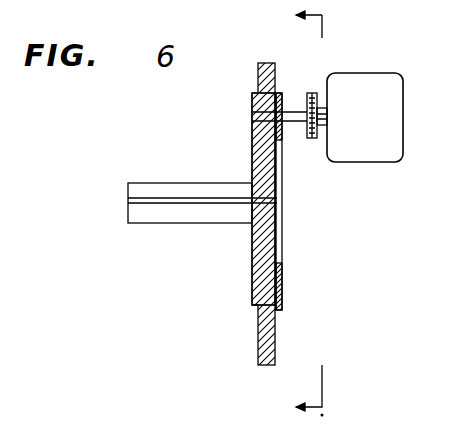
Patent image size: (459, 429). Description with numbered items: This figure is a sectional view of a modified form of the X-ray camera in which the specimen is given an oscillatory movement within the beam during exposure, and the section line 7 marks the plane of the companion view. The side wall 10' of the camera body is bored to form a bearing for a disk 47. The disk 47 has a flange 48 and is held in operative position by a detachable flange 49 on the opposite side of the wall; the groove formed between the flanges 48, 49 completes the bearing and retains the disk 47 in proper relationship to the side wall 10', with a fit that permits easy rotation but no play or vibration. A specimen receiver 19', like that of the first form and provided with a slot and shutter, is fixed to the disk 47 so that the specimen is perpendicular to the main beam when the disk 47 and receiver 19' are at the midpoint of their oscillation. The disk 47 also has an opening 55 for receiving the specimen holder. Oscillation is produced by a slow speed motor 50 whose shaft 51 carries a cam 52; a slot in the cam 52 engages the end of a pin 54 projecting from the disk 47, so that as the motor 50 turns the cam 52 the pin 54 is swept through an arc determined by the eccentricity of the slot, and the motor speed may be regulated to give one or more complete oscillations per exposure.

The section line 7- 7 is at (296, 213).
The side wall 10' is at (292, 214).
The disk 47 is at (273, 247).
The detachable flange 49 is at (283, 284).
The flange 48 is at (258, 307).
The specimen receiver 19' is at (190, 222).
The opening 55 is at (263, 200).
The pin 54 is at (290, 112).
The cam 52 is at (313, 93).
The shaft 51 is at (323, 135).
The slow speed motor 50 is at (398, 89).